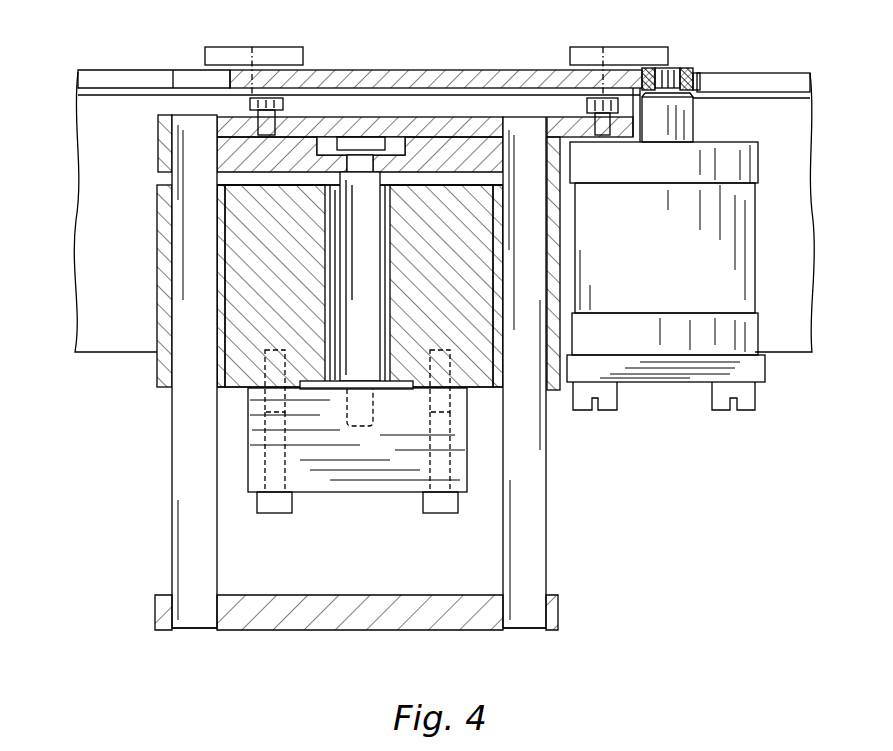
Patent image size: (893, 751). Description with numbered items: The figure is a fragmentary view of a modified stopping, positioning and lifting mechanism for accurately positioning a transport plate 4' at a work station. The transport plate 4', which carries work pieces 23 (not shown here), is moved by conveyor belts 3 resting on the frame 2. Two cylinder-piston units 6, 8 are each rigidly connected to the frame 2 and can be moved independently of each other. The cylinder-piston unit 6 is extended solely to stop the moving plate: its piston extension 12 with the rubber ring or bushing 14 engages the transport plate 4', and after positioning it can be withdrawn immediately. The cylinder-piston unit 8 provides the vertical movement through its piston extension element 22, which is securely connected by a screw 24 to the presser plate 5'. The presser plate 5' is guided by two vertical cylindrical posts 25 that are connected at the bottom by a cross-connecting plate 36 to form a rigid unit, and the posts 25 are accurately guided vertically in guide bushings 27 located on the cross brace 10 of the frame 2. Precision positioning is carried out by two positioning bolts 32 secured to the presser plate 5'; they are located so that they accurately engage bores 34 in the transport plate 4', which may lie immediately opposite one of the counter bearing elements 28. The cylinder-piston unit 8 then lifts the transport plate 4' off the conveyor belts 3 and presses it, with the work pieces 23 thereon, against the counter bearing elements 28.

The frame 2 is at (790, 345).
The conveyor belts 3 is at (120, 87).
The transport plate 4' is at (436, 60).
The presser plate 5' is at (428, 87).
The cylinder-piston unit 6 is at (722, 265).
The cylinder-piston unit 8 is at (330, 467).
The cross brace 10 is at (240, 287).
The piston extension 12 is at (672, 127).
The rubber ring or bushing 14 is at (690, 65).
The piston extension element 22 is at (355, 292).
The work pieces 23 is at (158, 153).
The screw 24 is at (383, 145).
The vertical cylindrical posts 25 is at (180, 460).
The guide bushings 27 is at (165, 388).
The counter bearing elements 28 is at (300, 40).
The positioning bolts 32 is at (283, 105).
The bores 34 is at (250, 47).
The cross-connecting plate 36 is at (473, 577).